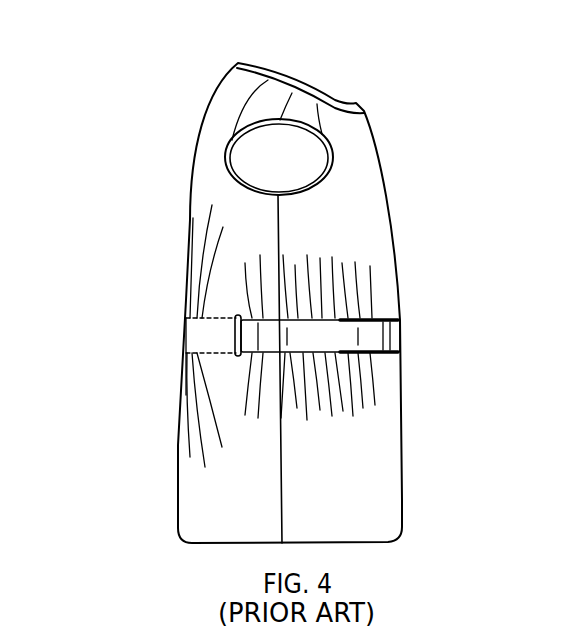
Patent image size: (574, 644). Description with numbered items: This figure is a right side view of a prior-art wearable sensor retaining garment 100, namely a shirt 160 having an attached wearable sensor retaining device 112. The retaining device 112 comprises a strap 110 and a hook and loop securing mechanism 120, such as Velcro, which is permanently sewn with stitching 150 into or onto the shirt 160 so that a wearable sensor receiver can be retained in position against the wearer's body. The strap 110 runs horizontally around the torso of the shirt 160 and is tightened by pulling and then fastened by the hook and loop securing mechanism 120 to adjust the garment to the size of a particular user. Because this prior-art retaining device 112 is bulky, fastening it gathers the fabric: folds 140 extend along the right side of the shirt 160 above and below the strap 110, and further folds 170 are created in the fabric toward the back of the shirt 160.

The wearable sensor retaining garment 100 is at (146, 66).
The strap 110 is at (390, 338).
The wearable sensor retaining device 112 is at (165, 336).
The hook and loop securing mechanism 120 is at (412, 314).
The folds 140 is at (352, 308).
The stitching 150 is at (210, 318).
The shirt 160 is at (370, 502).
The folds 170 is at (200, 405).